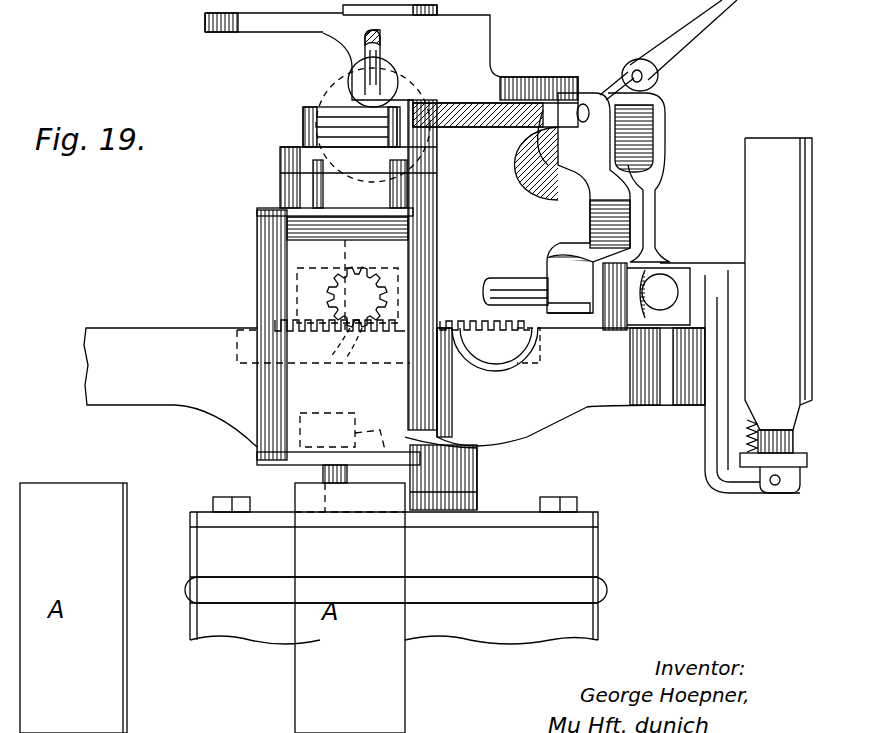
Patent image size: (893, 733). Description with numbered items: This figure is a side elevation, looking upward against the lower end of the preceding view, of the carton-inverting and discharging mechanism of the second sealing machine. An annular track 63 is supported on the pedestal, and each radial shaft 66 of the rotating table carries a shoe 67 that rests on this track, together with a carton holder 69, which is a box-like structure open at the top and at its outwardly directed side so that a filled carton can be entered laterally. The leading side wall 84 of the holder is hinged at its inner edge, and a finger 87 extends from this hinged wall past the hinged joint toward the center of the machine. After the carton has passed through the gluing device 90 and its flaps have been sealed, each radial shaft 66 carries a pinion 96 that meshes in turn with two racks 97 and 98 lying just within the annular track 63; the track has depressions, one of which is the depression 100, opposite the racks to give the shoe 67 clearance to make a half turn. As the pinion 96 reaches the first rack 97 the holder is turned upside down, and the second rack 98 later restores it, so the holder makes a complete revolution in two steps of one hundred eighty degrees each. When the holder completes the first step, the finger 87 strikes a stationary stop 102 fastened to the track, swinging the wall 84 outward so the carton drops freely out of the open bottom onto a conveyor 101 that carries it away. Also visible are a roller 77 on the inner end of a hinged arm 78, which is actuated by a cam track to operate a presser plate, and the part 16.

The conveyor 101 is at (133, 0).
The head casting 16 is at (297, 30).
The roller 77 is at (340, 97).
The hinged arm 78 is at (390, 67).
The radial shaft 66 is at (515, 287).
The second rack 98 is at (462, 320).
The gluing device 90 is at (343, 268).
The shoe 67 is at (275, 312).
The first rack 97 is at (340, 362).
The hinged side wall 84 is at (262, 274).
The annular track 63 is at (655, 400).
The depression 100 is at (487, 372).
The pinion 96 is at (651, 366).
The carton holder 69 is at (758, 210).
The finger 87 is at (257, 457).
The stop 102 is at (283, 472).